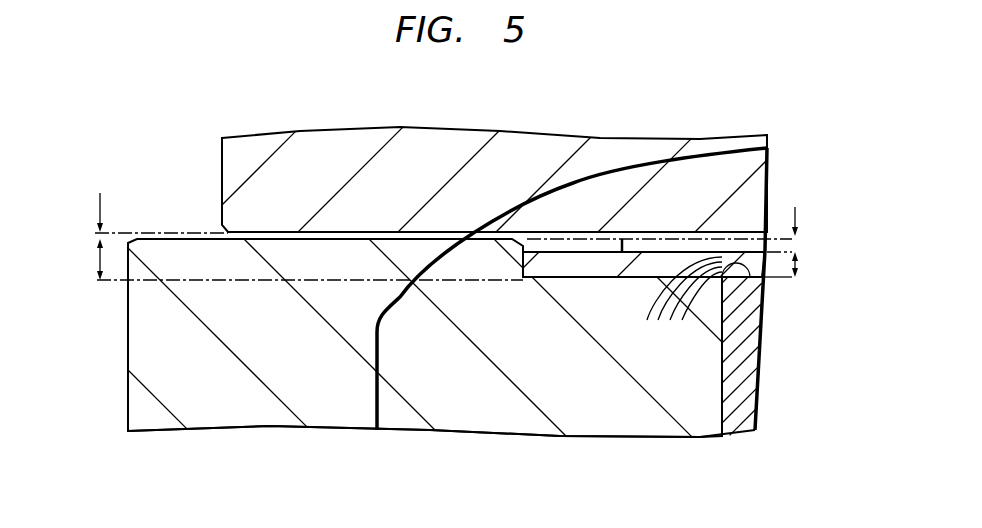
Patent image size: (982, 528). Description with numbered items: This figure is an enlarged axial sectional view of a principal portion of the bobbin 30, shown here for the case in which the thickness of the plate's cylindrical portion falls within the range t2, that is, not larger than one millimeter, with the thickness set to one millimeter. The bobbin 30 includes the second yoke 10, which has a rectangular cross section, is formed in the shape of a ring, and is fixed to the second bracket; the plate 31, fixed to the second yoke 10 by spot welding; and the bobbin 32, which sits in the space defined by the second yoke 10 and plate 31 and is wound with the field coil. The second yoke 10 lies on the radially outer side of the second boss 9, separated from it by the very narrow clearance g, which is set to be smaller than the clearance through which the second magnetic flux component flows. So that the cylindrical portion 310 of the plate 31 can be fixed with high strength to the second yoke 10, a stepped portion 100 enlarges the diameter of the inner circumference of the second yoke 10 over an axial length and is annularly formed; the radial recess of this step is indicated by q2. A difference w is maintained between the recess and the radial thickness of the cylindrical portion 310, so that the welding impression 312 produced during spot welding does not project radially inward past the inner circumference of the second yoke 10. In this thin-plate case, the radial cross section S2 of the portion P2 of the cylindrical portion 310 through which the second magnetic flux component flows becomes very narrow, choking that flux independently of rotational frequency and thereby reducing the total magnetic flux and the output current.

The second boss 9 is at (232, 157).
The second yoke 10 is at (160, 350).
The bobbin 30 is at (190, 455).
The plate 31 is at (631, 268).
The bobbin 32 is at (748, 347).
The stepped portion 100 is at (568, 277).
The cylindrical portion 310 is at (748, 270).
The welding impression 312 is at (617, 243).
The portion P2 is at (707, 253).
The radial cross section S2 is at (752, 312).
The very narrow clearance g is at (91, 218).
The dimension q2 is at (87, 259).
The difference w is at (807, 230).
The thickness range t2 is at (808, 264).